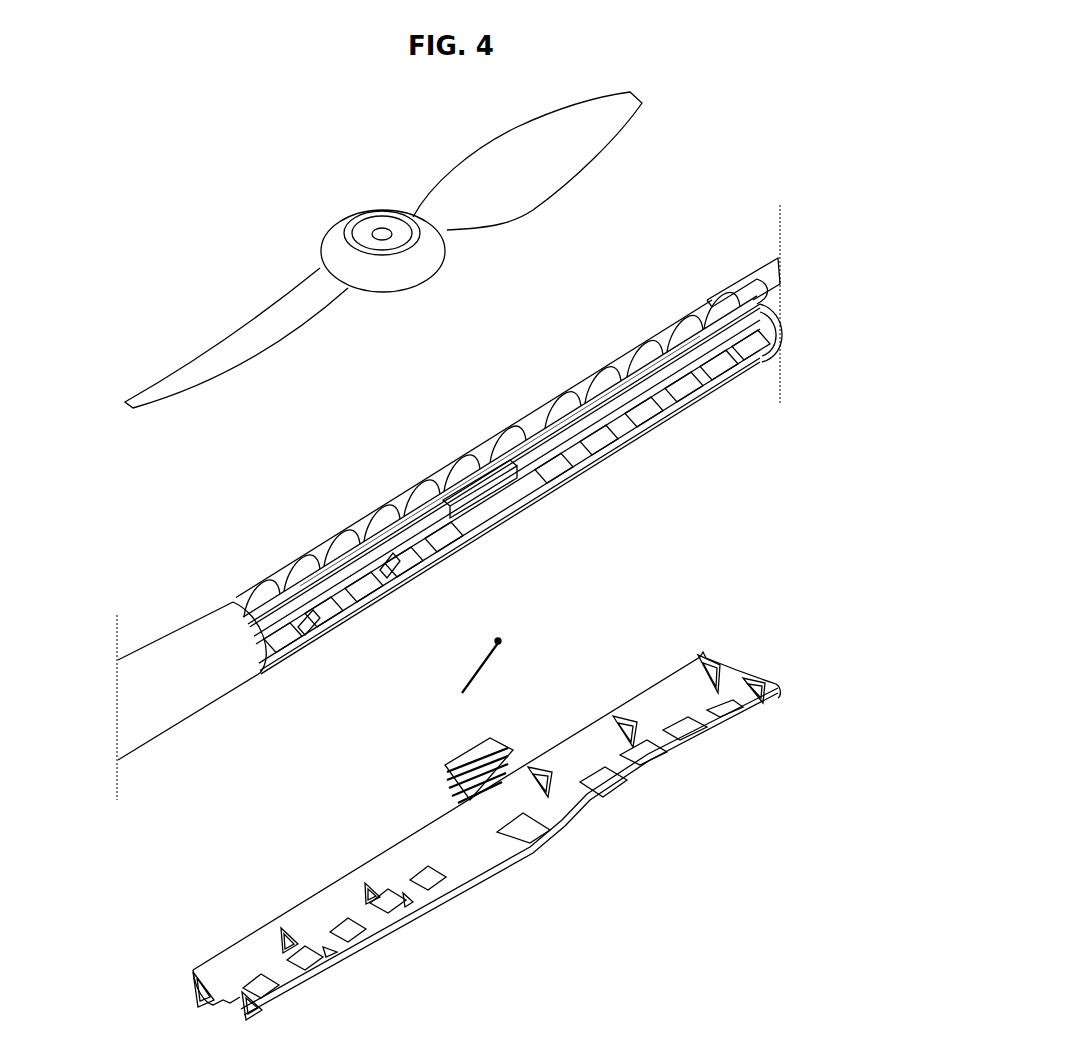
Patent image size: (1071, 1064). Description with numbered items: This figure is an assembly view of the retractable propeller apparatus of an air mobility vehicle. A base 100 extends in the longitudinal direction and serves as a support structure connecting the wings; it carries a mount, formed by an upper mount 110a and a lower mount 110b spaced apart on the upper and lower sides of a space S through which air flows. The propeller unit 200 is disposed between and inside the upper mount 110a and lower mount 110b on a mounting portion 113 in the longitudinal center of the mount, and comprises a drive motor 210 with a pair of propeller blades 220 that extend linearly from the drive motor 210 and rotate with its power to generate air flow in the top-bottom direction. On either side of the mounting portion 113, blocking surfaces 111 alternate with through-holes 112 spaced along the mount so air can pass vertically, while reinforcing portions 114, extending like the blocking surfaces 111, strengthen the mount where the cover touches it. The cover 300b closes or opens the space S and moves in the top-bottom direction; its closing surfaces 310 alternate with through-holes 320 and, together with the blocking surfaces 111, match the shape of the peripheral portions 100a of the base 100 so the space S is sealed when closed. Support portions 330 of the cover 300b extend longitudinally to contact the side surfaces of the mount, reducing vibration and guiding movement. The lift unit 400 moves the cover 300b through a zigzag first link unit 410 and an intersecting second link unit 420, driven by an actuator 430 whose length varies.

The base 100 is at (192, 657).
The peripheral portions 100a is at (183, 693).
The upper mount 110a is at (508, 430).
The lower mount 110b is at (518, 499).
The blocking surfaces 111 is at (350, 530).
The through-holes 112 is at (643, 367).
The mounting portion 113 is at (500, 520).
The reinforcing portions 114 is at (390, 570).
The space S is at (527, 440).
The propeller unit 200 is at (383, 250).
The drive motor 210 is at (337, 232).
The propeller blades 220 is at (193, 357).
The cover 300b is at (486, 846).
The closing surfaces 310 is at (657, 737).
The through-holes 320 is at (353, 930).
The support portions 330 is at (367, 883).
The lift unit 400 is at (464, 719).
The first link unit 410 is at (450, 802).
The second link unit 420 is at (503, 742).
The actuator 430 is at (503, 662).